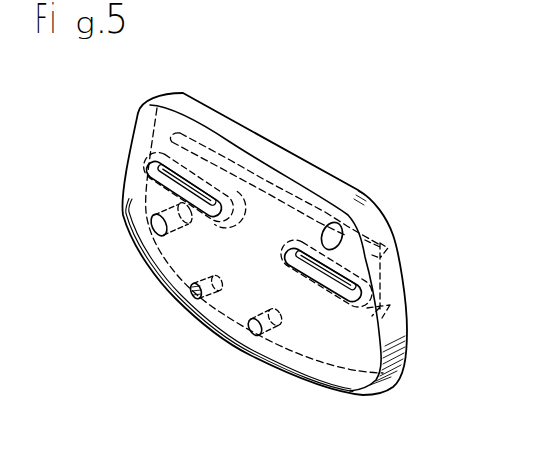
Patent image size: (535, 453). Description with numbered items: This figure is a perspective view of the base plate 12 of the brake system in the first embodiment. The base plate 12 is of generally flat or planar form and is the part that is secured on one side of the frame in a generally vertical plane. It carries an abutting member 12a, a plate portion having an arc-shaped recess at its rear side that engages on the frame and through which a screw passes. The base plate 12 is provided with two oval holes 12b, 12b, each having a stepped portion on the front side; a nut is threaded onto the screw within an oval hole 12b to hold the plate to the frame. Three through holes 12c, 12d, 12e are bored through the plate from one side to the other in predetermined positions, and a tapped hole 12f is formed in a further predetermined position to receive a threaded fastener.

The base plate 12 is at (303, 128).
The abutting member 12a is at (382, 247).
The oval hole 12b is at (158, 180).
The through hole 12c is at (332, 237).
The through hole 12d is at (154, 232).
The through hole 12e is at (250, 328).
The tapped hole 12f is at (194, 297).